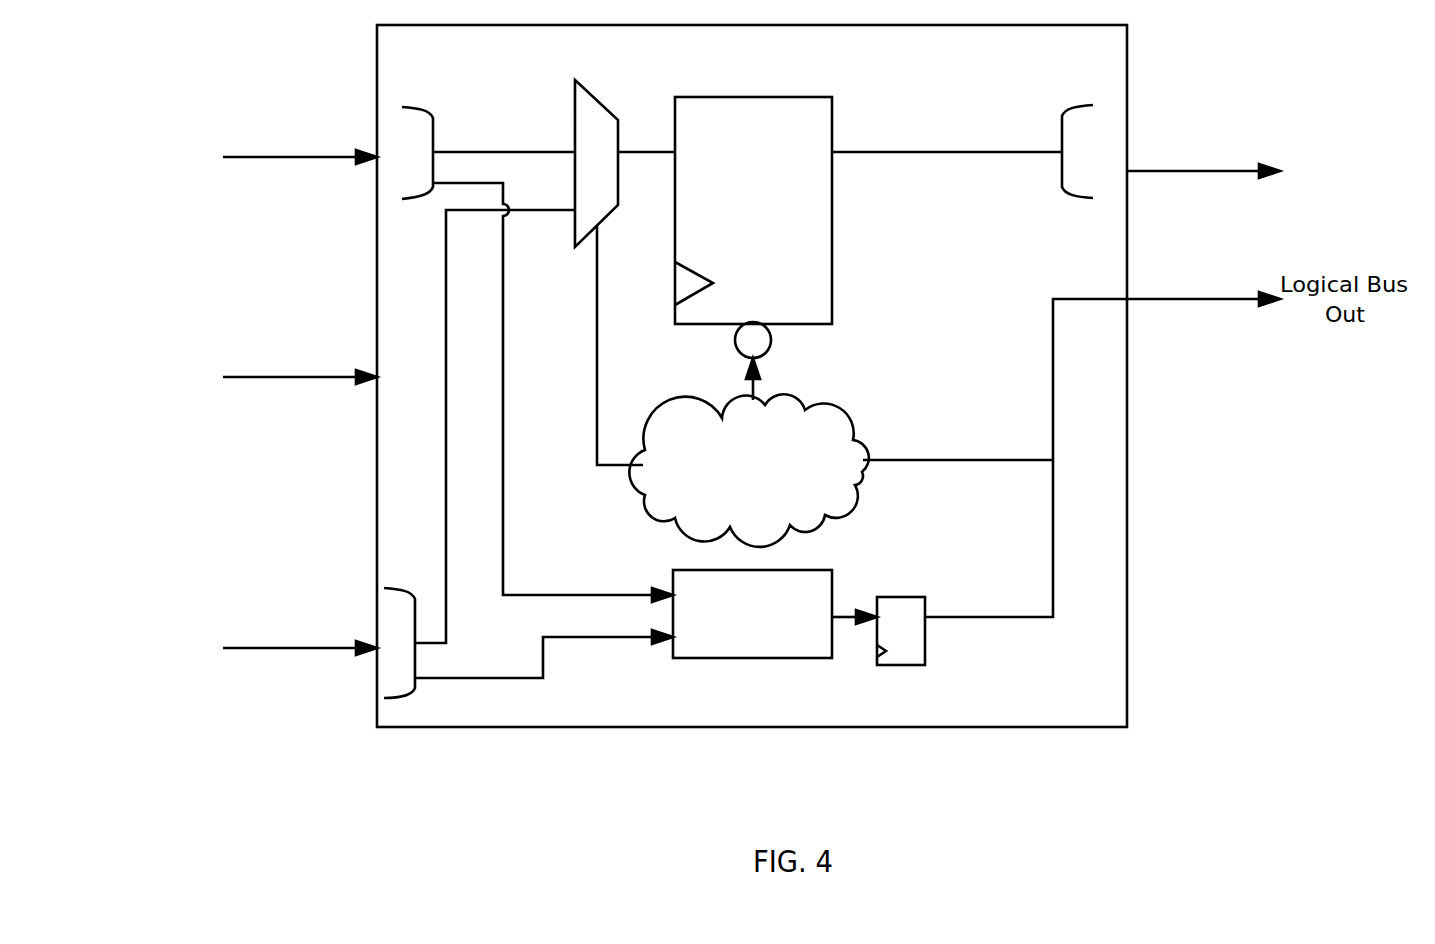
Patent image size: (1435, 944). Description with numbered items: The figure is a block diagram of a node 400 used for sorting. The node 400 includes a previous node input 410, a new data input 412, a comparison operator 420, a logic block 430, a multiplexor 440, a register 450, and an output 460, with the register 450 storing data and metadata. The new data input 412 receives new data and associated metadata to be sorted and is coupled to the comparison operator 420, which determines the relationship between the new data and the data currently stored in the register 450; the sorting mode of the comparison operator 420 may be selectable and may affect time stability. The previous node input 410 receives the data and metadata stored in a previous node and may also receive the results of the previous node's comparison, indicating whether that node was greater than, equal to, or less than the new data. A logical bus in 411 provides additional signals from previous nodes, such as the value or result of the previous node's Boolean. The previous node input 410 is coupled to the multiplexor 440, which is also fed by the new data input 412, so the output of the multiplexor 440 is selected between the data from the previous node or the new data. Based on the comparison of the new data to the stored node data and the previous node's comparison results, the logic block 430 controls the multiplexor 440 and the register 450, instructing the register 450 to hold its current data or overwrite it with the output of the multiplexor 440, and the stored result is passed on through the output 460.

The node 400 is at (732, 84).
The previous node input 410 is at (330, 157).
The logical bus in 411 is at (330, 377).
The new data input 412 is at (330, 648).
The comparison operator 420 is at (832, 577).
The logic block 430 is at (840, 415).
The multiplexor 440 is at (575, 108).
The register 450 is at (832, 288).
The output 460 is at (1200, 171).